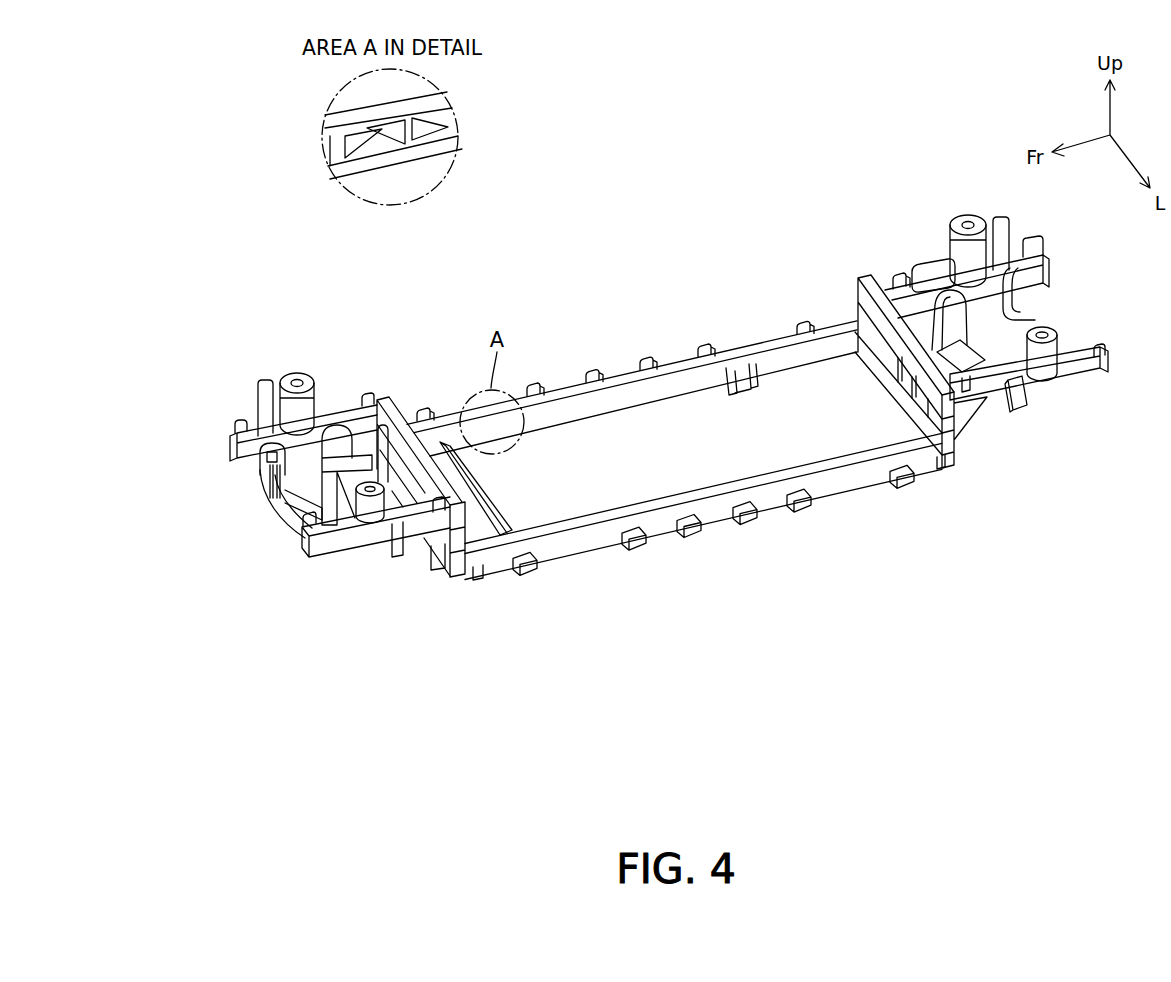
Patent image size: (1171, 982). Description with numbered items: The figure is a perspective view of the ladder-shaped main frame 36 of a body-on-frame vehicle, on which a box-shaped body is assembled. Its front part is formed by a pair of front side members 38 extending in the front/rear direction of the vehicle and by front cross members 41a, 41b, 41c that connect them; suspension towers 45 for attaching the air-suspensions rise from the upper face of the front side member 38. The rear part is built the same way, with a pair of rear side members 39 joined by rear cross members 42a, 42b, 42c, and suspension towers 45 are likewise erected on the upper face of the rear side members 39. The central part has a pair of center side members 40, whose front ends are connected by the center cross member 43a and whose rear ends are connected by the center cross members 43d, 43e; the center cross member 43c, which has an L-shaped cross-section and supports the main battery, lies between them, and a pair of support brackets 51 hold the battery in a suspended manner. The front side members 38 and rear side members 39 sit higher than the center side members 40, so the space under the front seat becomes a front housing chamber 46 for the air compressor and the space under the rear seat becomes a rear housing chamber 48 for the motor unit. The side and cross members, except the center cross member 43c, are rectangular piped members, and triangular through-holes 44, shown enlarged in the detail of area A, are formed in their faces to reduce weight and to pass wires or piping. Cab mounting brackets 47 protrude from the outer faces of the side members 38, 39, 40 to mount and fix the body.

The main frame 36 is at (621, 192).
The front side member 38 is at (340, 410).
The rear side member 39 is at (882, 283).
The center side member 40 is at (692, 345).
The front cross member 41a is at (280, 507).
The front cross member 41b is at (342, 440).
The front cross member 41c is at (386, 425).
The rear cross member 42a is at (860, 280).
The rear cross member 42b is at (932, 282).
The rear cross member 42c is at (1036, 253).
The center cross member 43a is at (440, 568).
The center cross member 43c is at (485, 500).
The center cross member 43d is at (887, 393).
The center cross member 43e is at (952, 455).
The through-hole 44 is at (422, 132).
The suspension tower 45 is at (296, 372).
The front housing chamber 46 is at (310, 473).
The cab mounting bracket 47 is at (371, 393).
The rear housing chamber 48 is at (980, 353).
The support bracket 51 is at (748, 368).